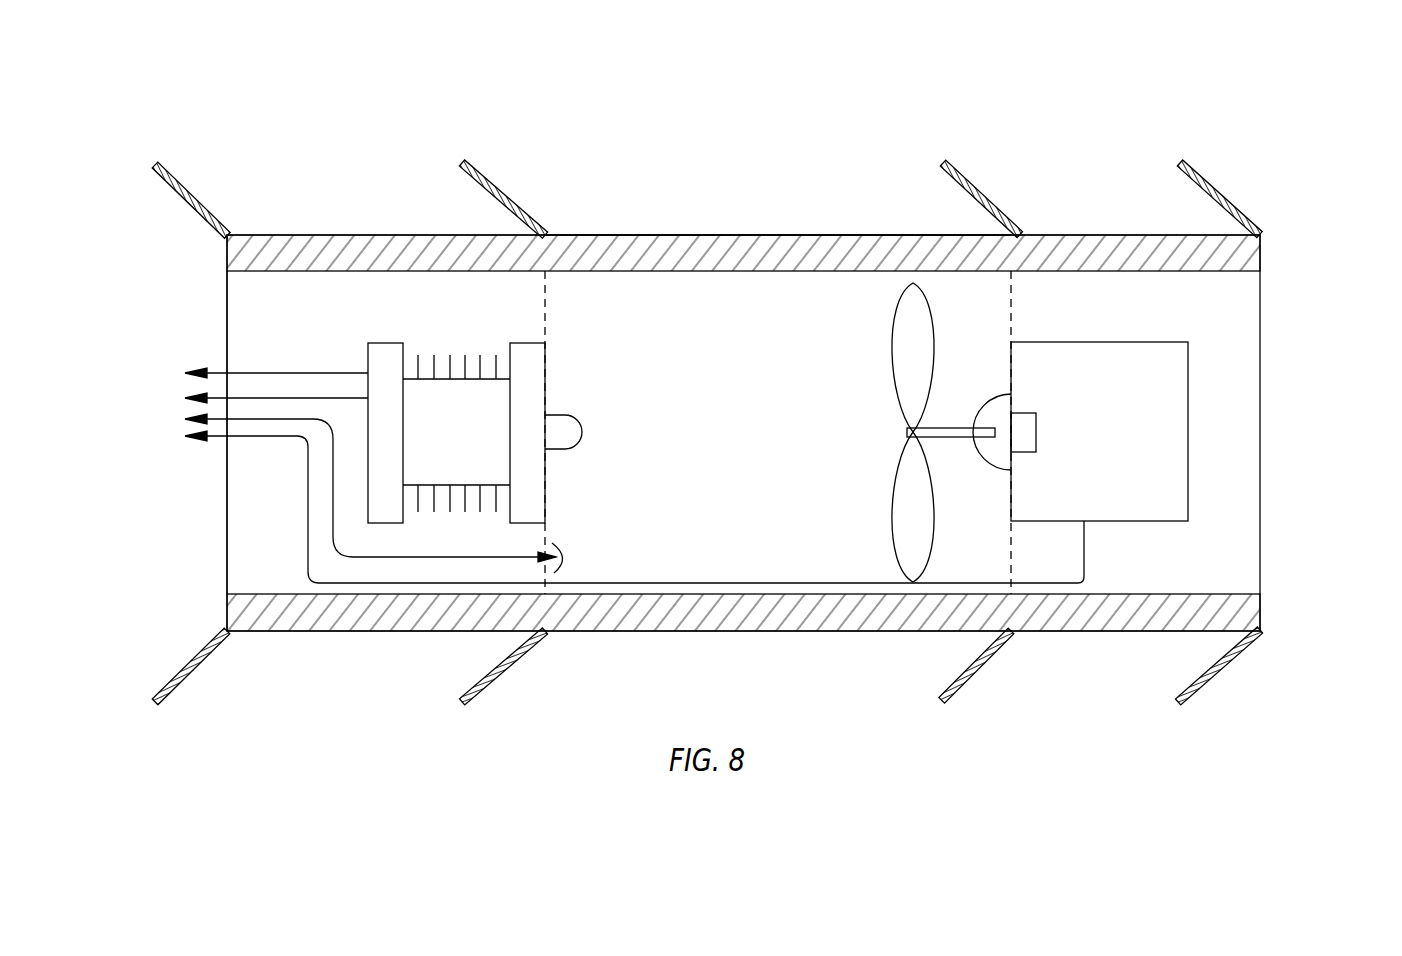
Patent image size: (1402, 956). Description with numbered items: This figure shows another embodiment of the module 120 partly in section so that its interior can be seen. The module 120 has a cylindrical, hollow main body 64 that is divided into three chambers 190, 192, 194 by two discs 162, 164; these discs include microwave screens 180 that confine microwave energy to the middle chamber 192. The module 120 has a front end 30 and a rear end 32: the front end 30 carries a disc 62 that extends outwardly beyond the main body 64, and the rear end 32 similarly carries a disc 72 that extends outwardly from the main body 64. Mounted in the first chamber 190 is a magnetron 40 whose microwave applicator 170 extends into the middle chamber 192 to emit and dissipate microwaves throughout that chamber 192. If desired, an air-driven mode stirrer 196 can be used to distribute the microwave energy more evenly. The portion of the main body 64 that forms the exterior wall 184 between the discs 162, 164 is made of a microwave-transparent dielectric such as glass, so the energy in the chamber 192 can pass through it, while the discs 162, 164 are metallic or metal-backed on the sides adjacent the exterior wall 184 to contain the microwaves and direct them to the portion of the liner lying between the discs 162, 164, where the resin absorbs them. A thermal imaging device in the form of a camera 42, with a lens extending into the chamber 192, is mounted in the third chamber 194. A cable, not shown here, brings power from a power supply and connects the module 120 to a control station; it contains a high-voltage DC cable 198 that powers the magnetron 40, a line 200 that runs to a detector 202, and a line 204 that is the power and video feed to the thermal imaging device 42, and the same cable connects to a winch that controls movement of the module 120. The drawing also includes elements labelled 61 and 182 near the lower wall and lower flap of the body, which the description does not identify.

The front end 30 is at (1260, 293).
The rear end 32 is at (227, 328).
The magnetron 40 is at (473, 387).
The thermal imaging device 42 is at (1097, 503).
The lower vent flap 61 is at (1222, 668).
The disc 62 is at (1227, 195).
The main body 64 is at (583, 248).
The disc 72 is at (190, 197).
The module 120 is at (793, 177).
The disc 162 is at (983, 195).
The disc 164 is at (502, 192).
The microwave applicator 170 is at (568, 437).
The microwave screens 180 is at (545, 318).
The bottom wall 182 is at (787, 613).
The exterior wall 184 is at (698, 255).
The chamber 190 is at (293, 305).
The chamber 192 is at (756, 313).
The chamber 194 is at (1133, 288).
The air-driven mode stirrer 196 is at (913, 562).
The high-voltage DC cable 198 is at (287, 373).
The line 200 is at (267, 419).
The detector 202 is at (563, 548).
The line 204 is at (313, 585).